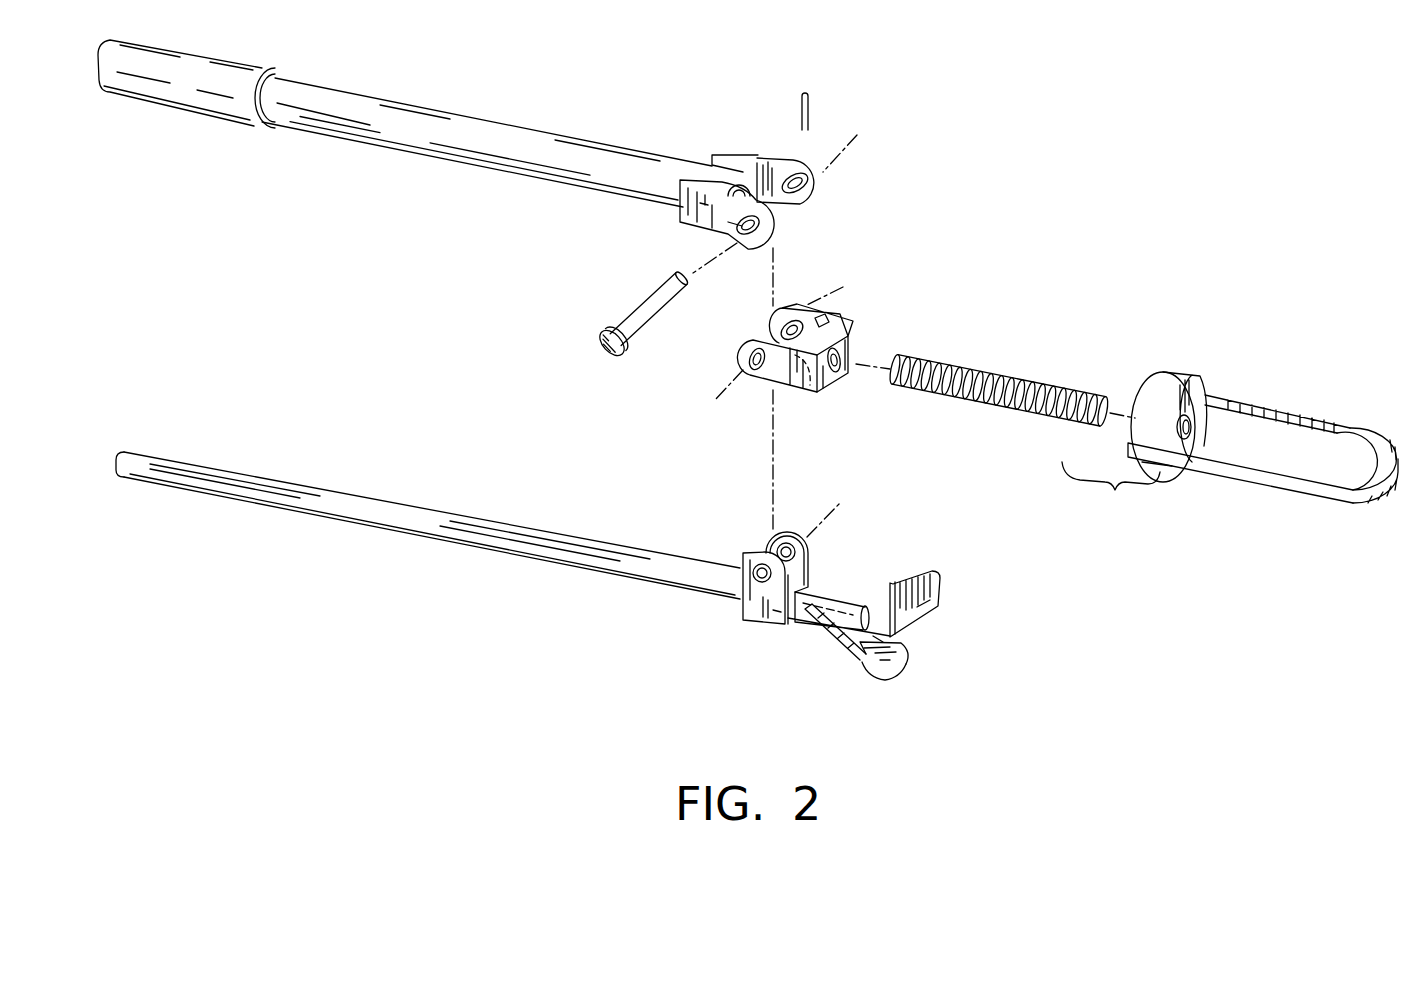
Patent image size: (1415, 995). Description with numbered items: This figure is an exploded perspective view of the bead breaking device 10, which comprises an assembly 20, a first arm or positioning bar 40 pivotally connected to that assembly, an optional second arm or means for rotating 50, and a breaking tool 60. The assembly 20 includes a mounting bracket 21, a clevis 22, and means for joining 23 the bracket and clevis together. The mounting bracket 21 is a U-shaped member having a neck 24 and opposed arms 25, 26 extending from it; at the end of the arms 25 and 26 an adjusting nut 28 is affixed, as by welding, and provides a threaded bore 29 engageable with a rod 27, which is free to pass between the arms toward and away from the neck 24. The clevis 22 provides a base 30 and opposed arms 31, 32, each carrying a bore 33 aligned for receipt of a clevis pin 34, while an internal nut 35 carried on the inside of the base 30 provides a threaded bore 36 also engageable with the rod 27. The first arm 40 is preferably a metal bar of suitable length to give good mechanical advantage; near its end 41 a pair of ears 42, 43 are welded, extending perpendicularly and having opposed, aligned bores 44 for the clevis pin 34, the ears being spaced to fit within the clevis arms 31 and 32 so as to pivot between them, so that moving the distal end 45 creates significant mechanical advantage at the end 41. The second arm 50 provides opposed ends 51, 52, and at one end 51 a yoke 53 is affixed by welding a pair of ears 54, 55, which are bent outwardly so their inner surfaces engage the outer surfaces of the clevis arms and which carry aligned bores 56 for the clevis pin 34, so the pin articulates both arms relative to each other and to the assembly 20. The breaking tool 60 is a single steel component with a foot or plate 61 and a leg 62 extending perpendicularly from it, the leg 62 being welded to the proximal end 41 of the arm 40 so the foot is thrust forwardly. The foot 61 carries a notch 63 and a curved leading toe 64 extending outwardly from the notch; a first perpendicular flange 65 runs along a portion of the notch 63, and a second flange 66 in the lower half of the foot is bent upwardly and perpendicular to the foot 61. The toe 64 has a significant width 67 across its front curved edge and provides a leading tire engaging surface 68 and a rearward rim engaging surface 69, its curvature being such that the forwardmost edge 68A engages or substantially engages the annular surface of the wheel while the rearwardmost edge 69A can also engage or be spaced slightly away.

The bead breaking device 10 is at (1222, 152).
The assembly 20 is at (1243, 340).
The mounting bracket 21 is at (1268, 473).
The clevis 22 is at (800, 390).
The means for joining 23 is at (1111, 495).
The neck 24 is at (1373, 483).
The arm 25 is at (1240, 473).
The arm 26 is at (1300, 418).
The rod 27 is at (1023, 407).
The adjusting nut 28 is at (1173, 383).
The threaded bore 29 is at (1193, 420).
The base 30 is at (850, 335).
The clevis arm 31 is at (743, 362).
The clevis arm 32 is at (793, 312).
The bore 33 is at (753, 340).
The clevis pin 34 is at (600, 322).
The internal nut 35 is at (828, 318).
The threaded bore 36 is at (837, 367).
The first arm 40 is at (402, 533).
The end 41 is at (842, 600).
The ear 42 is at (758, 608).
The ear 43 is at (767, 540).
The bores 44 is at (755, 570).
The distal end 45 is at (137, 473).
The second arm 50 is at (402, 152).
The end 51 is at (723, 177).
The end 52 is at (133, 92).
The yoke 53 is at (827, 173).
The ear 54 is at (685, 220).
The ear 55 is at (780, 163).
The bores 56 is at (757, 223).
The breaking tool 60 is at (881, 683).
The foot 61 is at (882, 600).
The leg 62 is at (793, 627).
The notch 63 is at (877, 640).
The toe 64 is at (903, 657).
The first perpendicular flange 65 is at (928, 578).
The second flange 66 is at (813, 632).
The width 67 is at (903, 668).
The tire engaging surface 68 is at (872, 678).
The forwardmost edge 68A is at (880, 680).
The rim engaging surface 69 is at (883, 648).
The rearwardmost edge 69A is at (907, 650).